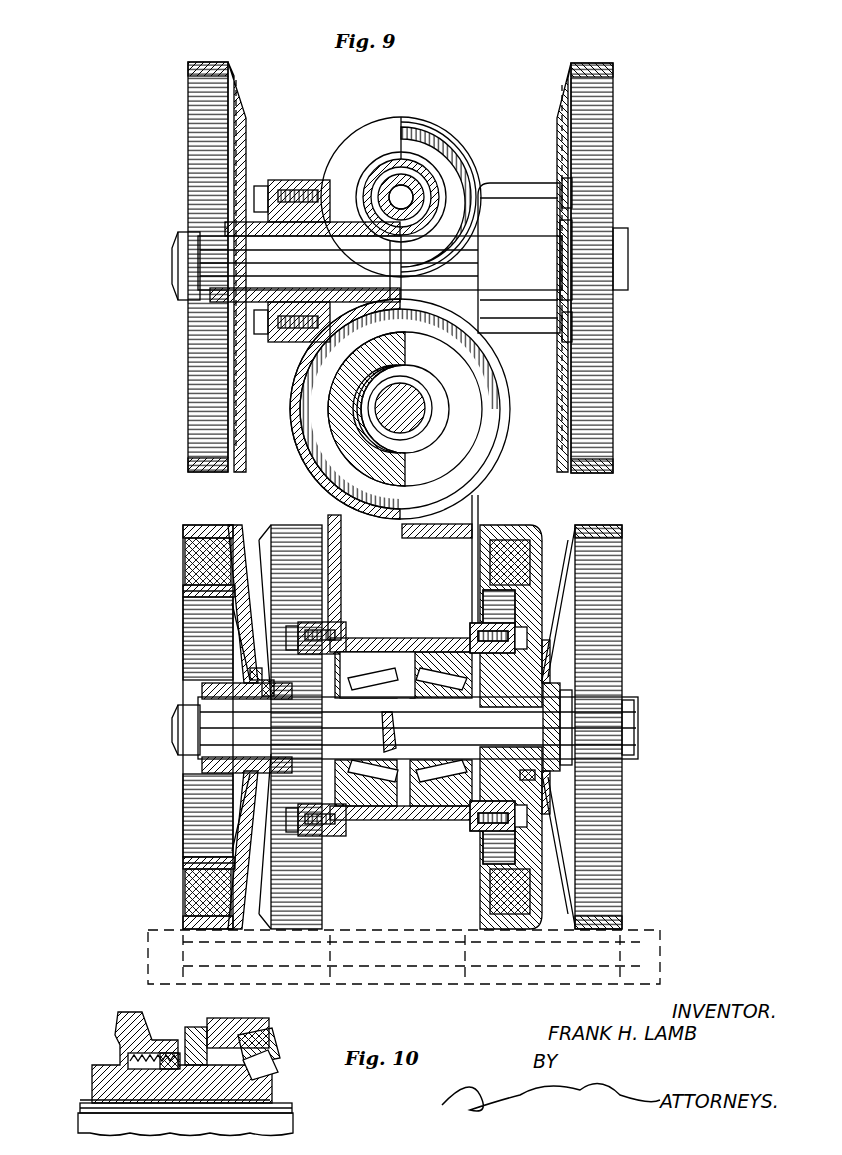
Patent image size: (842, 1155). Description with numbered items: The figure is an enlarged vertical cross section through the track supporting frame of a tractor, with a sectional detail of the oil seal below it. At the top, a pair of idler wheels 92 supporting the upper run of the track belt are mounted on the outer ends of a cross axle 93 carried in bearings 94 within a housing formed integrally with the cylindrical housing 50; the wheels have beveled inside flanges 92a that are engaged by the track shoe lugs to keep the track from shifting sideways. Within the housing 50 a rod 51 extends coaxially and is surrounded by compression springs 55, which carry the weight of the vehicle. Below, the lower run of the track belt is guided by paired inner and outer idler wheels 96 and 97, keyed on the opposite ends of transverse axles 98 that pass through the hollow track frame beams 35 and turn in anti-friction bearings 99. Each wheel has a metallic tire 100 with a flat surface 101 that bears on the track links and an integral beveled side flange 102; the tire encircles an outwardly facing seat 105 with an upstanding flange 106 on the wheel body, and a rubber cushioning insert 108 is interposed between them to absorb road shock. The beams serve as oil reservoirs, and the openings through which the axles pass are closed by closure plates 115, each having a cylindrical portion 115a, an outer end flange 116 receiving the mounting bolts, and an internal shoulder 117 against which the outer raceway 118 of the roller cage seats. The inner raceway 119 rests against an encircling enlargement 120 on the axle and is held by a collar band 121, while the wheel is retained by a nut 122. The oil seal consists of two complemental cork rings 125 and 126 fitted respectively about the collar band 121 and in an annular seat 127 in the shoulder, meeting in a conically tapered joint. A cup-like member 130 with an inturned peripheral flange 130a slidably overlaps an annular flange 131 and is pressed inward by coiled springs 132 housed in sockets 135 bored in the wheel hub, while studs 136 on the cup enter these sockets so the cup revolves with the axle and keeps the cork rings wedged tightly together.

In FIG. 9, the idler wheels 92 is at (205, 70).
In FIG. 9, the beveled inside flanges 92a is at (244, 100).
In FIG. 9, the cross axle 93 is at (210, 258).
In FIG. 9, the bearings 94 is at (302, 182).
In FIG. 9, the compression springs 55 is at (465, 408).
In FIG. 9, the rod 51 is at (420, 420).
In FIG. 9, the cylindrical housing 50 is at (505, 456).
In FIG. 9, the metallic tire 100 is at (197, 525).
In FIG. 9, the beveled side flange 102 is at (240, 540).
In FIG. 9, the rubber cushioning insert 108 is at (186, 548).
In FIG. 9, the upstanding flange 106 is at (186, 590).
In FIG. 9, the outwardly facing seat 105 is at (186, 598).
In FIG. 9, the inner idler wheels 96 is at (323, 870).
In FIG. 9, the closure plates 115 is at (290, 650).
In FIG. 9, the cylindrical portion 115a is at (420, 840).
In FIG. 9, the outer raceway 118 is at (432, 655).
In FIG. 9, the anti-friction bearings 99 is at (403, 717).
In FIG. 9, the internal shoulder 117 is at (472, 652).
In FIG. 9, the outer end flange 116 is at (535, 660).
In FIG. 9, the transverse axles 98 is at (634, 730).
In FIG. 10, the transverse axles 98 is at (280, 1122).
In FIG. 9, the inner raceway 119 is at (398, 725).
In FIG. 9, the encircling enlargement 120 is at (560, 722).
In FIG. 9, the collar band 121 is at (240, 688).
In FIG. 10, the collar band 121 is at (292, 1108).
In FIG. 9, the nut 122 is at (178, 720).
In FIG. 9, the cup-like member 130 is at (550, 682).
In FIG. 10, the cup-like member 130 is at (125, 1035).
In FIG. 9, the annular flange 131 is at (535, 800).
In FIG. 10, the annular flange 131 is at (195, 1027).
In FIG. 9, the cork sealing ring 125 is at (250, 690).
In FIG. 10, the cork sealing ring 125 is at (276, 1082).
In FIG. 9, the cork sealing ring 126 is at (248, 682).
In FIG. 10, the cork sealing ring 126 is at (280, 1040).
In FIG. 9, the track frame beams 35 is at (373, 820).
In FIG. 9, the outer idler wheels 97 is at (183, 832).
In FIG. 9, the flat surface 101 is at (175, 935).
In FIG. 10, the inturned peripheral flange 130a is at (160, 1020).
In FIG. 10, the annular seat 127 is at (270, 1022).
In FIG. 10, the sockets 135 is at (128, 1058).
In FIG. 10, the studs 136 is at (125, 1068).
In FIG. 10, the coiled springs 132 is at (92, 1095).